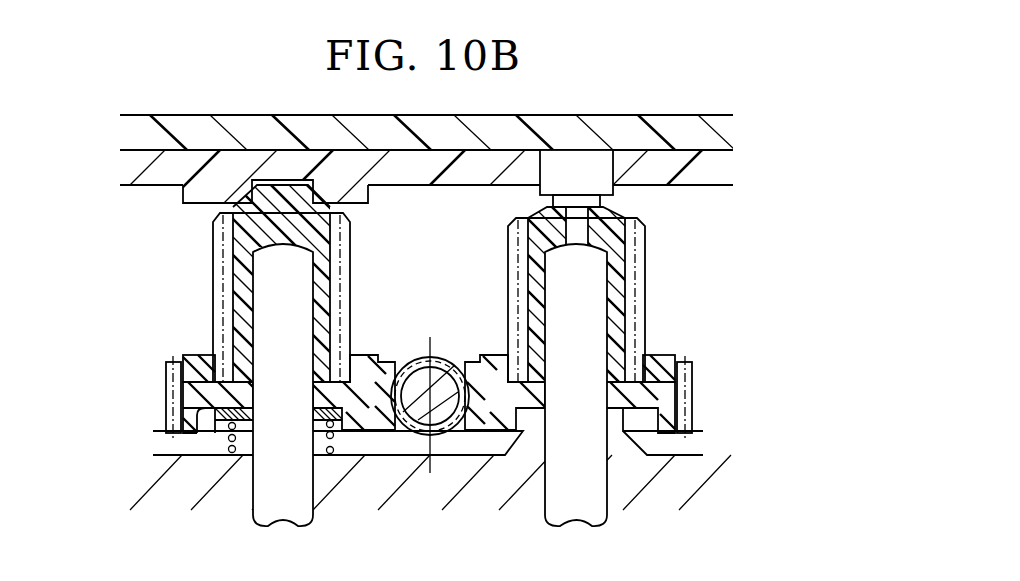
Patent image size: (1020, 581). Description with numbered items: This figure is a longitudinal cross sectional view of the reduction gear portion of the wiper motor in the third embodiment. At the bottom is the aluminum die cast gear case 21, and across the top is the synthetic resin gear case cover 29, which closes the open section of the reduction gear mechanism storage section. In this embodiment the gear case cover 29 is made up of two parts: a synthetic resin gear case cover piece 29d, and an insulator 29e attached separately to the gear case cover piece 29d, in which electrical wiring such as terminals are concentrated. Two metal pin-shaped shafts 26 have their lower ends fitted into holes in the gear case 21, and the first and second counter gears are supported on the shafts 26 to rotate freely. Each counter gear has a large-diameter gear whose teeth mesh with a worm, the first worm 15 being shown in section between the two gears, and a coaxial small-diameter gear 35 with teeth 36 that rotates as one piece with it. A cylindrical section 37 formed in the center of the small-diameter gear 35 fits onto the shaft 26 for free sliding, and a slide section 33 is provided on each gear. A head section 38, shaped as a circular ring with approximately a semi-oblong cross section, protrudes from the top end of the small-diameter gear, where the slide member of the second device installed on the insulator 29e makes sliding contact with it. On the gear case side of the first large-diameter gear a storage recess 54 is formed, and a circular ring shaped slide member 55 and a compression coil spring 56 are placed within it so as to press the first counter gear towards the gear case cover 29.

The gear case cover 29 is at (183, 114).
The gear case cover piece 29d is at (252, 114).
The insulator 29e is at (145, 188).
The first small-diameter gear 35 is at (227, 279).
The teeth 36 is at (214, 316).
The cylindrical section 37 is at (330, 283).
The head section 38 is at (603, 206).
The slide member 55 is at (326, 410).
The slide section 33 is at (187, 355).
The storage recess 54 is at (225, 436).
The compression coil spring 56 is at (226, 443).
The shaft 26 is at (258, 498).
The first worm 15 is at (405, 434).
The gear case 21 is at (705, 488).